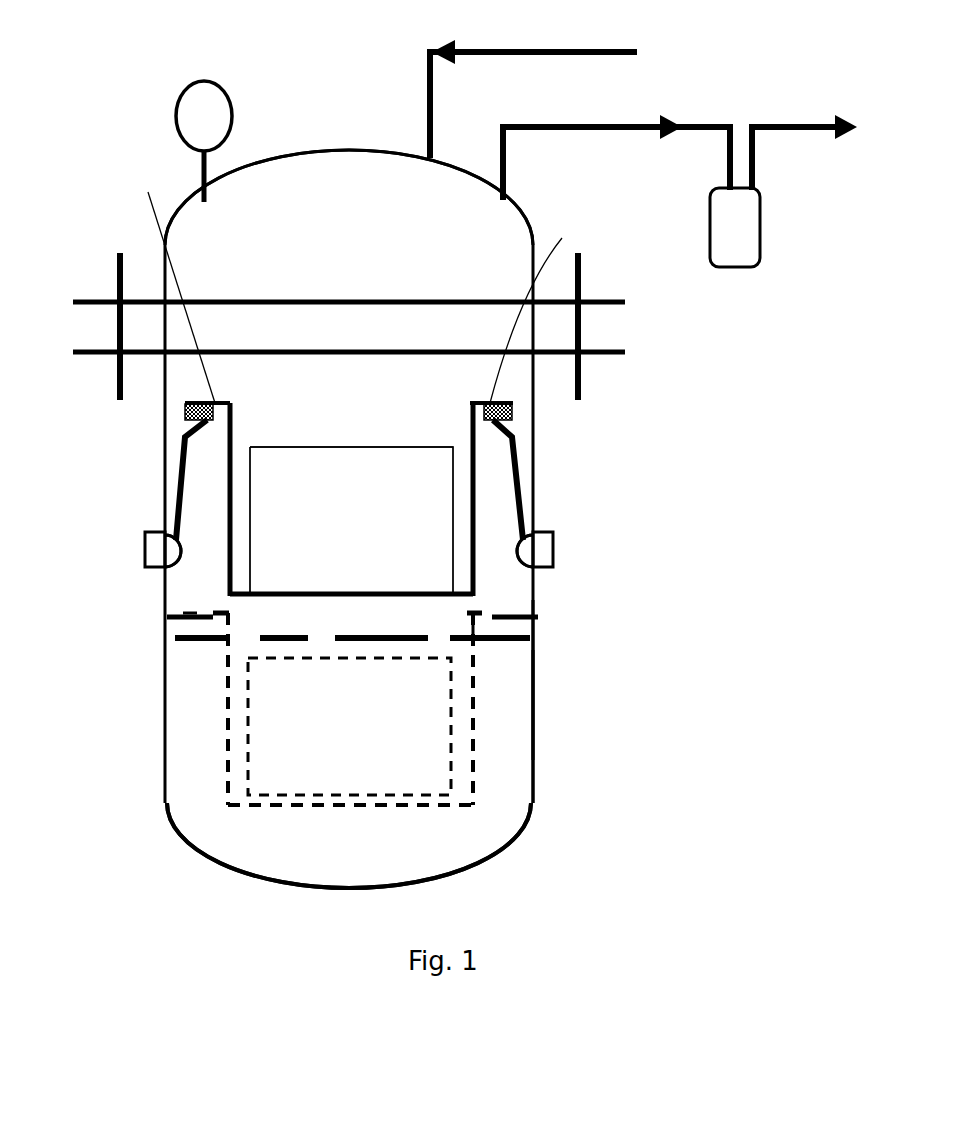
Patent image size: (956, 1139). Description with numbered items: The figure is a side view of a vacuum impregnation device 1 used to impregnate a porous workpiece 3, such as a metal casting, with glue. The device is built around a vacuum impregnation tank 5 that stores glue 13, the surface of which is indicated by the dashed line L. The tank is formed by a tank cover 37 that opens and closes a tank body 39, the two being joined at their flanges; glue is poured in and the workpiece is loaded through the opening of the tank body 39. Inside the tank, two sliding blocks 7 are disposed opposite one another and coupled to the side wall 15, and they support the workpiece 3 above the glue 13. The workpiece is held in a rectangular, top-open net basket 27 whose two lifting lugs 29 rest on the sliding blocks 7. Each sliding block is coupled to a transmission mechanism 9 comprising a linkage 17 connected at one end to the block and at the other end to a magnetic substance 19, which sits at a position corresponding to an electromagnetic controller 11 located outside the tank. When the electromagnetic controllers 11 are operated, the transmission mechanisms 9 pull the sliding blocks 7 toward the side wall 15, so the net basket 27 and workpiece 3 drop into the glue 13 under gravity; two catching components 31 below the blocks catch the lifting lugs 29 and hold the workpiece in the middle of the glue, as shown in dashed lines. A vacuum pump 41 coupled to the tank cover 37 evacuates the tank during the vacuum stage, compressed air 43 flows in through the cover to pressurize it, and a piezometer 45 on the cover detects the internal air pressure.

The vacuum impregnation device 1 is at (53, 166).
The workpiece 3 is at (266, 562).
The vacuum impregnation tank 5 is at (138, 752).
The sliding block 7 is at (188, 405).
The transmission mechanism 9 is at (158, 492).
The electromagnetic controller 11 is at (150, 533).
The glue 13 is at (505, 770).
The side wall 15 is at (535, 716).
The linkage 17 is at (178, 470).
The magnetic substance 19 is at (170, 563).
The net basket 27 is at (480, 582).
The lifting lug 29 is at (354, 290).
The catching component 31 is at (182, 620).
The tank cover 37 is at (305, 172).
The tank body 39 is at (520, 690).
The vacuum pump 41 is at (745, 222).
The compressed air 43 is at (637, 50).
The piezometer 45 is at (207, 110).
The dashed line L is at (210, 645).